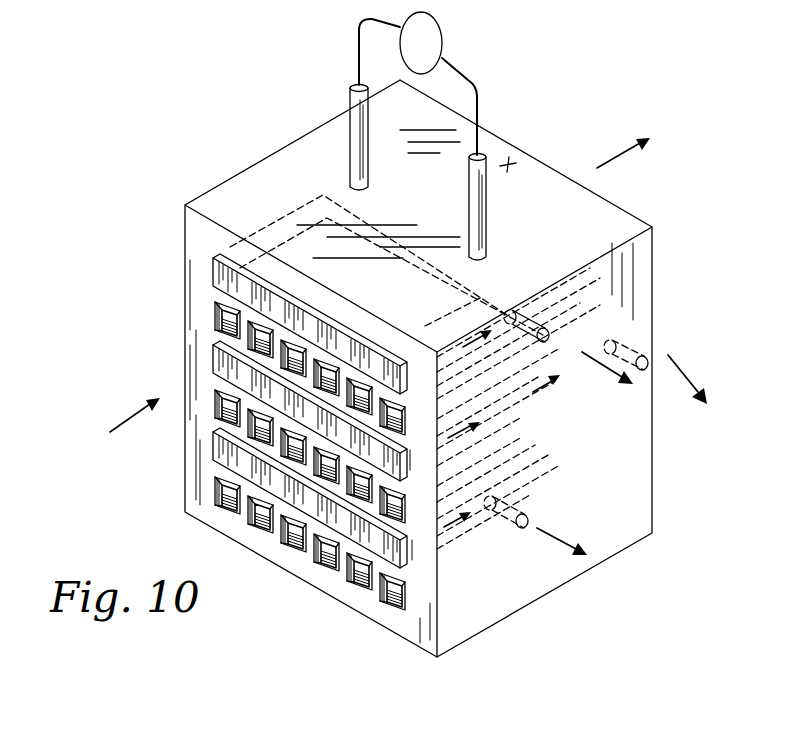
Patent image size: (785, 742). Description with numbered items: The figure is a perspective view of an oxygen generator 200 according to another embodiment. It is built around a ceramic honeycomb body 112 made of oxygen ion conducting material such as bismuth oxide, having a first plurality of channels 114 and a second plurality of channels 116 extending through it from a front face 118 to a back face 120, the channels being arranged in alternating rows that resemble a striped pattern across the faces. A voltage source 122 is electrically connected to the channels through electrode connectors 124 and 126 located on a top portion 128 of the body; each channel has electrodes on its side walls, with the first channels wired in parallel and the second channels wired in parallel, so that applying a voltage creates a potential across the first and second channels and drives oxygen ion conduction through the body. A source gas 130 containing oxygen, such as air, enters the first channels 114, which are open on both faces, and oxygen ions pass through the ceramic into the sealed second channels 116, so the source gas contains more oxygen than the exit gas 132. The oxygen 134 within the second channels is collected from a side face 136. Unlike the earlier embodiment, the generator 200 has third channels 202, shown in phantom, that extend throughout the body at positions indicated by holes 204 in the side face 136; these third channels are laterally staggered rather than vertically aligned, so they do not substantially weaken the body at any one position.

The ceramic honeycomb body 112 is at (310, 573).
The first plurality of channels 114 is at (213, 310).
The second plurality of channels 116 is at (240, 250).
The front face 118 is at (387, 608).
The back face 120 is at (640, 208).
The voltage source 122 is at (440, 28).
The electrode connector 124 is at (483, 188).
The electrode connector 126 is at (352, 125).
The top portion 128 is at (318, 137).
The source gas 130 is at (113, 424).
The exit gas 132 is at (644, 143).
The oxygen 134 is at (604, 370).
The side face 136 is at (497, 593).
The oxygen generator 200 is at (212, 134).
The third channels 202 is at (530, 300).
The holes 204 is at (548, 335).